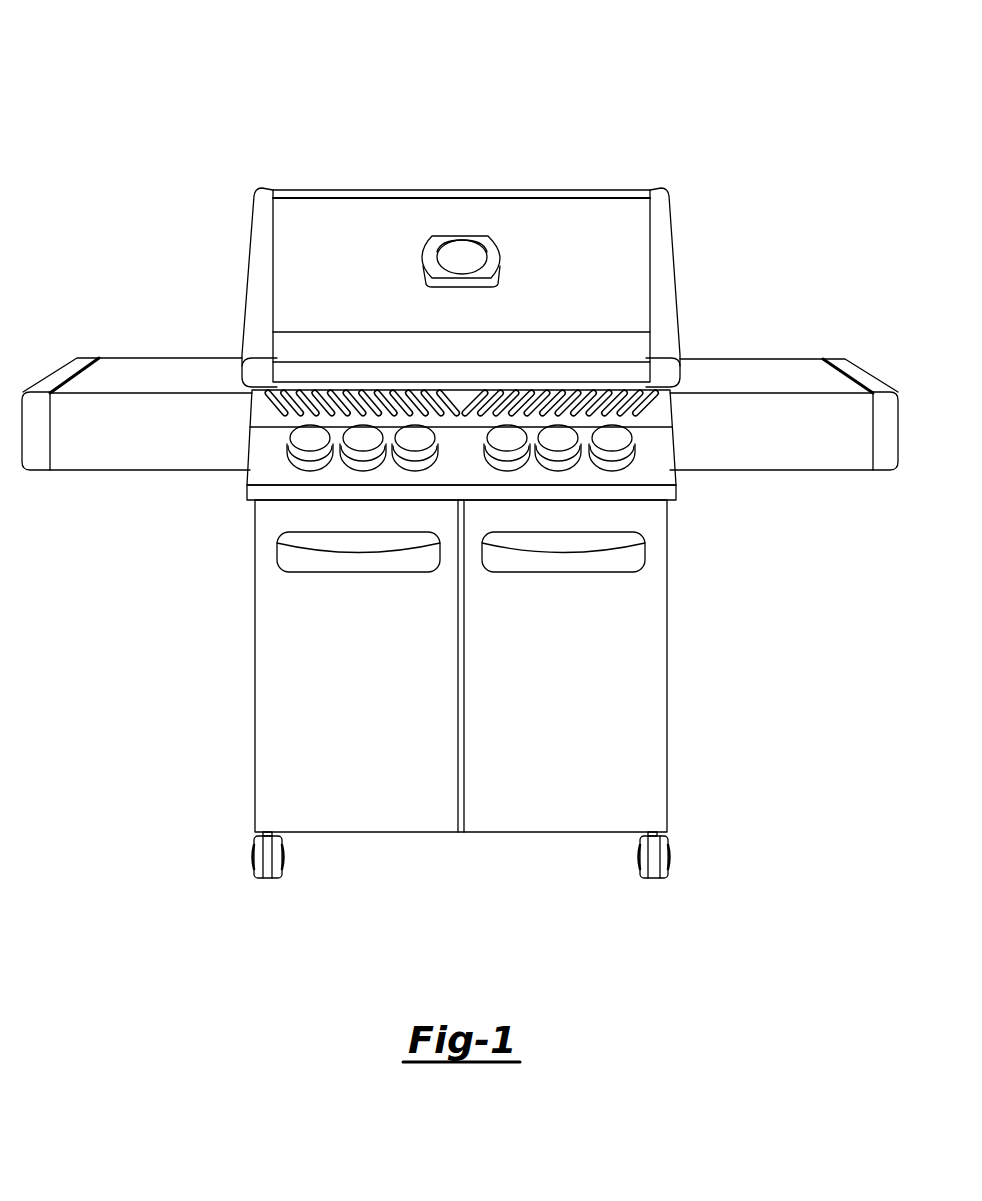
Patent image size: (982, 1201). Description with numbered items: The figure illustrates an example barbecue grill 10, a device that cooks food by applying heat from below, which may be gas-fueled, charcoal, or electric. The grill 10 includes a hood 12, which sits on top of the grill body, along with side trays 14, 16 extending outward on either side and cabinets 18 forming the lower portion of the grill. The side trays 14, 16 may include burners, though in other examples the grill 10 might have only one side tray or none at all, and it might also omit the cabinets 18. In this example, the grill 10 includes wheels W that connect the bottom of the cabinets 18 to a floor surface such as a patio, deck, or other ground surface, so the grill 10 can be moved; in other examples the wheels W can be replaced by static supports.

The barbecue grill 10 is at (557, 77).
The hood 12 is at (647, 175).
The side tray 14 is at (152, 347).
The side tray 16 is at (772, 345).
The cabinets 18 is at (700, 657).
The wheels W is at (235, 856).